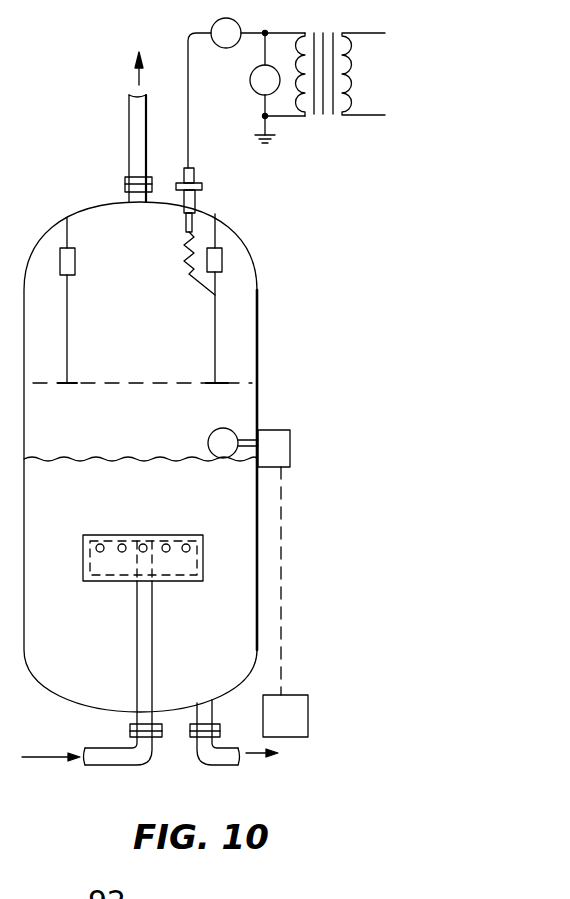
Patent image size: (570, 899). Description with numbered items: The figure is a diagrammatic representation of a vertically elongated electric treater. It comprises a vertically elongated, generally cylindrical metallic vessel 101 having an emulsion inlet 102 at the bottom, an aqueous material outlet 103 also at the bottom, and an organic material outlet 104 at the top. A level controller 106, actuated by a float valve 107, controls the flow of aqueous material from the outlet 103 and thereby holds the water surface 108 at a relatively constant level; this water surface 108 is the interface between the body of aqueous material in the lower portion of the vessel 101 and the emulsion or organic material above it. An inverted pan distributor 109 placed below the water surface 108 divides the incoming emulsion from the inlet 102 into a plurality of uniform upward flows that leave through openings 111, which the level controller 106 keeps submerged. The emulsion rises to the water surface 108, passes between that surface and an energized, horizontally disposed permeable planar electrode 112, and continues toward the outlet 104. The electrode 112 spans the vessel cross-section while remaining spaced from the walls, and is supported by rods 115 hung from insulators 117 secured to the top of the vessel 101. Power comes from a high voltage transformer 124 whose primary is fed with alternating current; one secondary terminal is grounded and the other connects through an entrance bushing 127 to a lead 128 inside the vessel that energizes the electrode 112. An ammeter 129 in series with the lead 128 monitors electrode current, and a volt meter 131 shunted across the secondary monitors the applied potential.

The metallic vessel 101 is at (258, 340).
The emulsion inlet 102 is at (118, 757).
The aqueous material outlet 103 is at (218, 760).
The organic material outlet 104 is at (130, 130).
The level controller 106 is at (303, 708).
The float valve 107 is at (210, 437).
The water surface 108 is at (104, 457).
The distributor 109 is at (165, 565).
The openings 111 is at (165, 545).
The permeable planar electrode 112 is at (121, 383).
The rods 115 is at (216, 318).
The insulators 117 is at (222, 255).
The high voltage transformer 124 is at (332, 30).
The entrance bushing 127 is at (198, 200).
The lead 128 is at (187, 266).
The ammeter 129 is at (210, 24).
The volt meter 131 is at (250, 82).